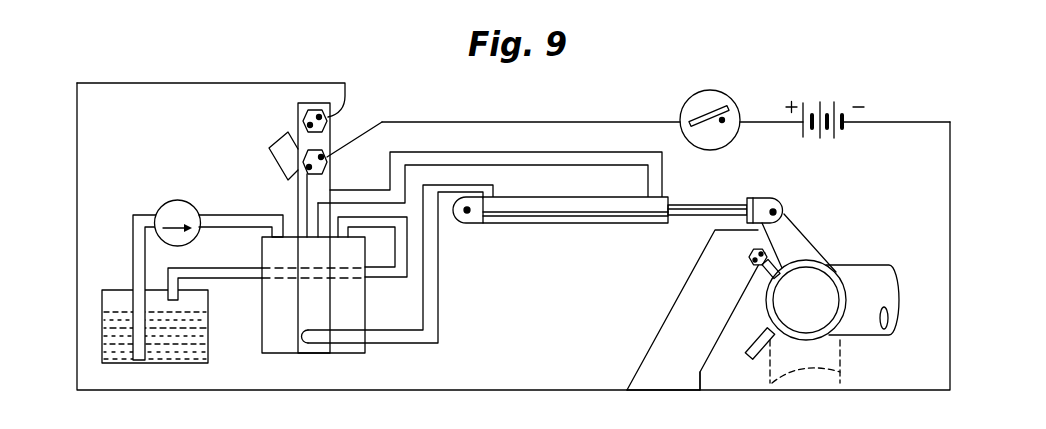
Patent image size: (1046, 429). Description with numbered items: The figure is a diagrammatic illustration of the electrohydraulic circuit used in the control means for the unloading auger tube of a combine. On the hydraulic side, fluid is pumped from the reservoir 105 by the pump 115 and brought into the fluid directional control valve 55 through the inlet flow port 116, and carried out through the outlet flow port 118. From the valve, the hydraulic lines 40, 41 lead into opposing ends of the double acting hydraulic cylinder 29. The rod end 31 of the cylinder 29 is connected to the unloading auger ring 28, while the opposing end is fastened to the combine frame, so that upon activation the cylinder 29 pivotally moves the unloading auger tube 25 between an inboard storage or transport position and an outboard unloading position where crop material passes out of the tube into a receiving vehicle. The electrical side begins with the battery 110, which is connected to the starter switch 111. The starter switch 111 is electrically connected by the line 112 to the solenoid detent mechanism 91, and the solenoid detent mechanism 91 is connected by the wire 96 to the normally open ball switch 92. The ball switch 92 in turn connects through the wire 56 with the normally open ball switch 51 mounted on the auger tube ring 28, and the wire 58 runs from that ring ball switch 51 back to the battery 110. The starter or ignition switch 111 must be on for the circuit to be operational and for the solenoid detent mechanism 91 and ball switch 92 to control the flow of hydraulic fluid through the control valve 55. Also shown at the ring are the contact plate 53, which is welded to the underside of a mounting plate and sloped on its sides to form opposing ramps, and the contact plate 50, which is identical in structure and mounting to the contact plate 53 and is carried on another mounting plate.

The unloading auger tube 25 is at (860, 265).
The unloading auger ring 28 is at (832, 344).
The double acting hydraulic cylinder 29 is at (540, 224).
The rod end 31 is at (696, 204).
The hydraulic line 40 is at (440, 287).
The hydraulic line 41 is at (636, 151).
The contact plate 50 is at (749, 256).
The normally open ball switch 51 is at (752, 263).
The contact plate 53 is at (757, 343).
The fluid directional control valve 55 is at (291, 214).
The wire 56 is at (670, 318).
The wire 58 is at (699, 380).
The solenoid detent mechanism 91 is at (328, 158).
The normally open ball switch 92 is at (328, 117).
The wire 96 is at (281, 140).
The reservoir 105 is at (117, 288).
The battery 110 is at (819, 98).
The starter switch 111 is at (710, 90).
The line 112 is at (553, 121).
The pump 115 is at (182, 200).
The inlet flow port 116 is at (257, 227).
The outlet flow port 118 is at (360, 232).